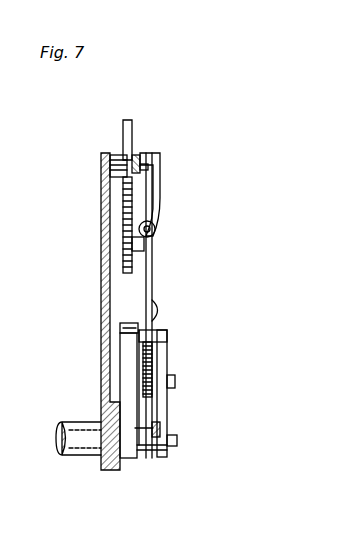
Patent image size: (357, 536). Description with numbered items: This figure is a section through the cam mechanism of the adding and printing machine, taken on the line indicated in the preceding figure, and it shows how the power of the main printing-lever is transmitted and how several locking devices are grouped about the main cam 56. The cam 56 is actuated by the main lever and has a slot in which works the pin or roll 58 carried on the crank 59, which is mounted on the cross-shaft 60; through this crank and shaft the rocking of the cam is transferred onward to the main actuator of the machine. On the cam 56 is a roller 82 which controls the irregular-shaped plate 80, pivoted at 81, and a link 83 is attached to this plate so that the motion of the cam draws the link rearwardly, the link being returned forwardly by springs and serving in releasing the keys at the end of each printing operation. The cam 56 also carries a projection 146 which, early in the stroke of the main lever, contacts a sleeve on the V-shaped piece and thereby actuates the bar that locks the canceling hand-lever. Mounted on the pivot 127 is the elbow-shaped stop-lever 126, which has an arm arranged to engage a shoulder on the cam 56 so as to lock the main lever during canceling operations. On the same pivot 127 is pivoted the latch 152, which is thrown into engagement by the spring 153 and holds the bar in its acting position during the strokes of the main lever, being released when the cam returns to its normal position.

The main cam 56 is at (160, 187).
The pin or roll 58 is at (168, 353).
The crank 59 is at (130, 367).
The cross-shaft 60 is at (90, 455).
The irregular-shaped plate 80 is at (167, 408).
The pivot 81 is at (177, 440).
The roller 82 is at (176, 380).
The link 83 is at (167, 430).
The elbow-shaped stop-lever 126 is at (137, 158).
The pivot 127 is at (145, 168).
The projection 146 is at (150, 233).
The latch 152 is at (133, 156).
The spring 153 is at (122, 202).